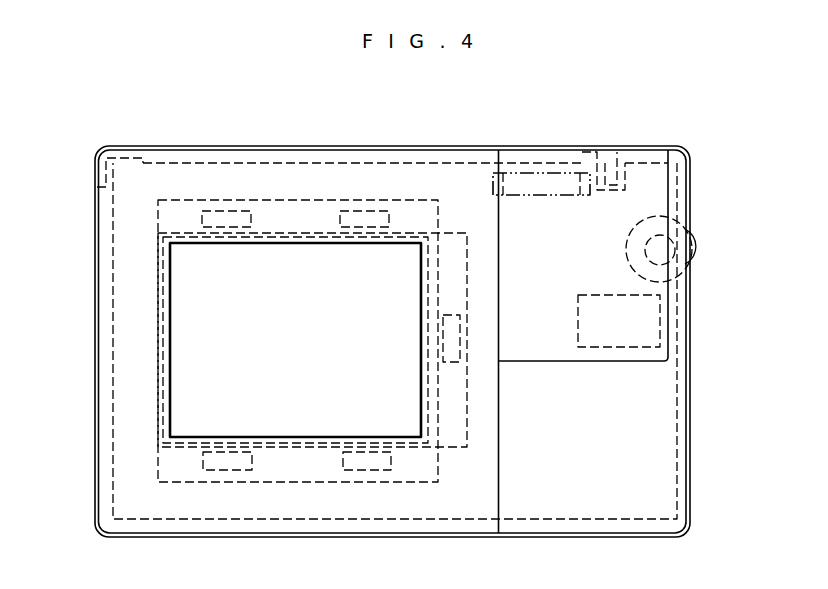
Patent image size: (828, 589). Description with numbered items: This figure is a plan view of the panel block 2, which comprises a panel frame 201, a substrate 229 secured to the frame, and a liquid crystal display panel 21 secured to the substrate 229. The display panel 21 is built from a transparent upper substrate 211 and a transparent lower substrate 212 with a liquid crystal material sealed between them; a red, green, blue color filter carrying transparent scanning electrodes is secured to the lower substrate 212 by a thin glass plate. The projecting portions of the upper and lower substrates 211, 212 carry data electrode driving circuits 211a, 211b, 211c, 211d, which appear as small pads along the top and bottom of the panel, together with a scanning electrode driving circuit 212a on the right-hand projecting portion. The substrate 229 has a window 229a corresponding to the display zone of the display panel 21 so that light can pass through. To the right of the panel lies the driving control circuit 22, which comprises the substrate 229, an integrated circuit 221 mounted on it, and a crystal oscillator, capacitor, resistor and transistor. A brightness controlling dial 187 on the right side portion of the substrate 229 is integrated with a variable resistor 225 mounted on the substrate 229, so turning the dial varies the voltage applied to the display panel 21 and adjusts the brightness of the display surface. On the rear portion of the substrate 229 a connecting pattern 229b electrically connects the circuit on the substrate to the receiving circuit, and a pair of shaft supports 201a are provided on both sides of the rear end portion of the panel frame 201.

The panel block 2 is at (473, 146).
The panel frame 201 is at (678, 148).
The shaft supports 201a is at (118, 155).
The liquid crystal display panel 21 is at (157, 288).
The driving control circuit 22 is at (525, 521).
The brightness controlling dial 187 is at (694, 247).
The transparent upper substrate 211 is at (178, 205).
The data electrodes driving circuit 211a is at (234, 215).
The data electrodes driving circuit 211b is at (373, 215).
The data electrodes driving circuit 211c is at (223, 468).
The data electrodes driving circuit 211d is at (373, 470).
The transparent lower substrate 212 is at (463, 437).
The scanning electrode driving circuit 212a is at (458, 345).
The integrated circuit 221 is at (658, 327).
The variable resistor 225 is at (652, 245).
The substrate 229 is at (133, 512).
The window 229a is at (170, 385).
The connecting pattern 229b is at (512, 187).